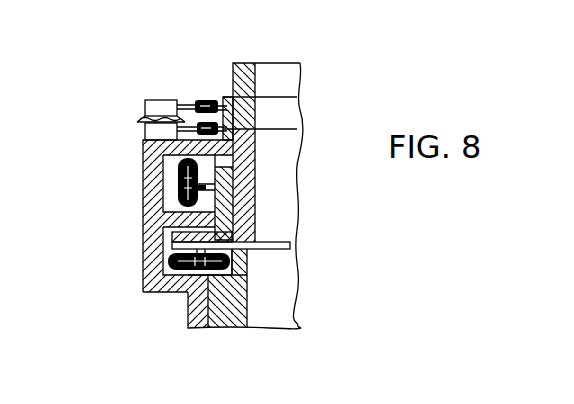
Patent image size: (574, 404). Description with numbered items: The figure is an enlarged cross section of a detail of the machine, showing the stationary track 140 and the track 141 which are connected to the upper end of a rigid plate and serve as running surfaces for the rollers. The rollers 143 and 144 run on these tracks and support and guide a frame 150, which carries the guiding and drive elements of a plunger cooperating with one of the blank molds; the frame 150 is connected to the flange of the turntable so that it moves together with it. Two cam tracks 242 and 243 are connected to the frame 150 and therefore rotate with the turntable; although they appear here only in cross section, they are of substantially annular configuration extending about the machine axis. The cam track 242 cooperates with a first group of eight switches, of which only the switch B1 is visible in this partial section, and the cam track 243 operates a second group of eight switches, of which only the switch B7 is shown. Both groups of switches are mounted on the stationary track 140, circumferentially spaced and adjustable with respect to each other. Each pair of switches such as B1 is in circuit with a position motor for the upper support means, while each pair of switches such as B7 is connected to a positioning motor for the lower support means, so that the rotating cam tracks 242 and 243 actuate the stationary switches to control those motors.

The switch B7 is at (145, 105).
The switch B1 is at (146, 129).
The roller 143 is at (178, 179).
The track 140 is at (147, 215).
The roller 144 is at (168, 261).
The frame 150 is at (263, 229).
The track 141 is at (235, 328).
The cam track 243 is at (250, 97).
The cam track 242 is at (247, 129).